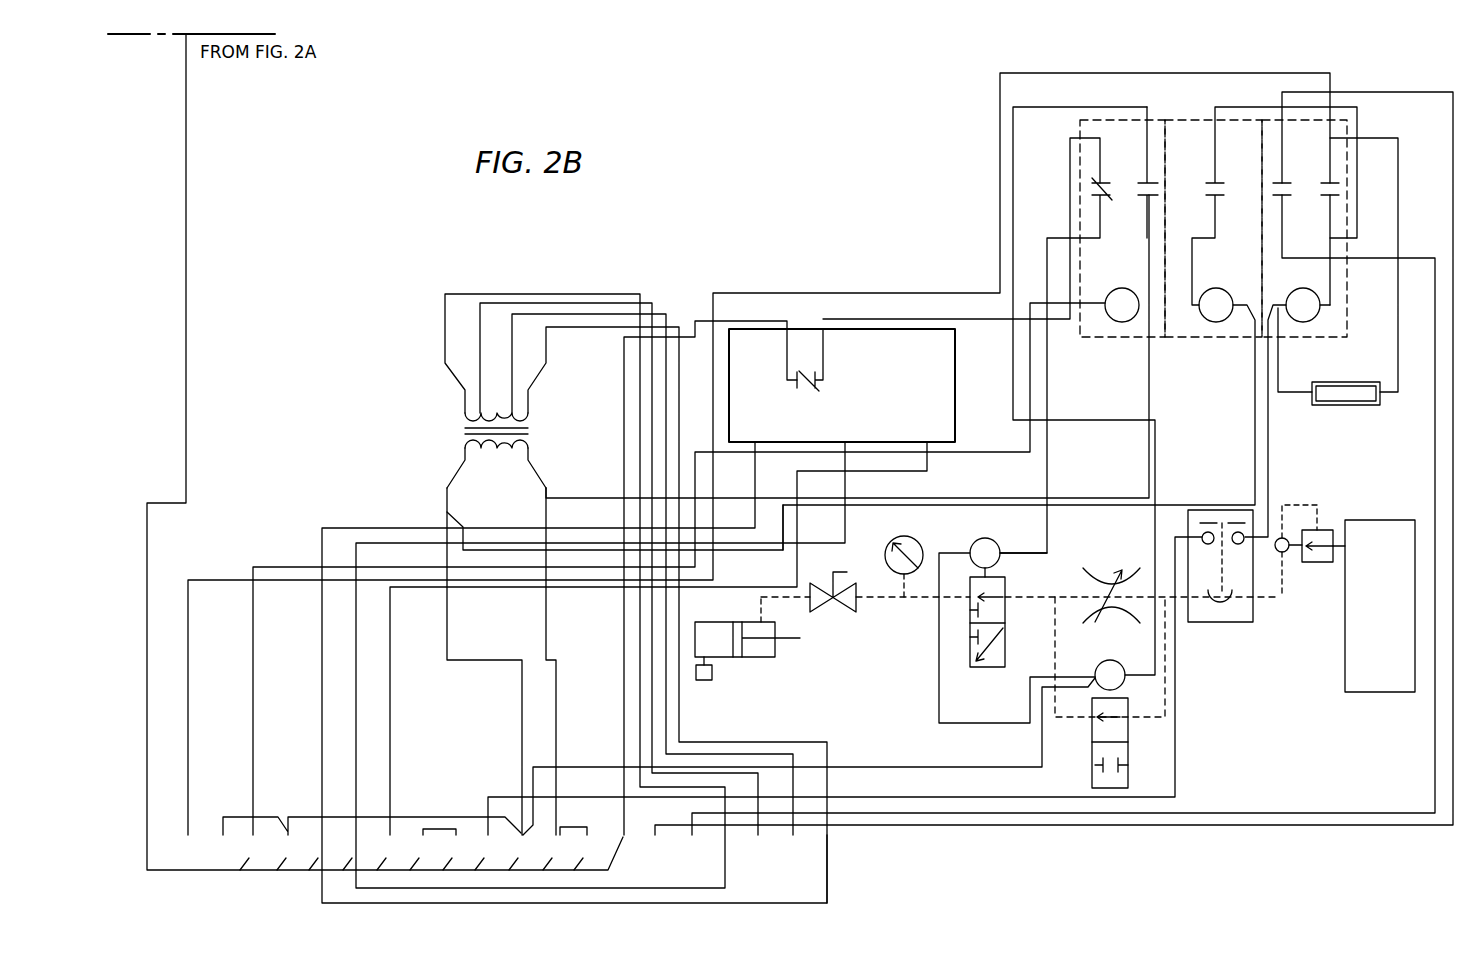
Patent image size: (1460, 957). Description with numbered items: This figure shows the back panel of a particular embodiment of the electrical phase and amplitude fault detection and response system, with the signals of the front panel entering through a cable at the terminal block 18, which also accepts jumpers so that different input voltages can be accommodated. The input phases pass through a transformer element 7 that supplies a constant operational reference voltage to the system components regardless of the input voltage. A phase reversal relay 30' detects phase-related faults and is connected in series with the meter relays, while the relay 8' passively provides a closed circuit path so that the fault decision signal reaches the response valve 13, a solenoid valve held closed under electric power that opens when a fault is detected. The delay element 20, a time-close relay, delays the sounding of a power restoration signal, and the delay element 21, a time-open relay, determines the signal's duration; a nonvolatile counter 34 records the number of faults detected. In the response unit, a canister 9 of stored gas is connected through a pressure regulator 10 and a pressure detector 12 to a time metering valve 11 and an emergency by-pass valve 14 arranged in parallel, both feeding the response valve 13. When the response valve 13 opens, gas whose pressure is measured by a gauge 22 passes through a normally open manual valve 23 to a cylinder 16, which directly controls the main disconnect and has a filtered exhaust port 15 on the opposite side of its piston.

The transformer element 7 is at (488, 452).
The relay 8' is at (1082, 391).
The delay element 20 is at (1220, 340).
The delay element 21 is at (1312, 340).
The counter 34 is at (1322, 405).
The phase reversal relay 30' is at (842, 385).
The gauge 22 is at (920, 544).
The manual valve 23 is at (822, 602).
The cylinder 16 is at (748, 658).
The filtered exhaust port 15 is at (712, 681).
The response valve 13 is at (994, 668).
The time metering valve 11 is at (1098, 576).
The pressure detector 12 is at (1212, 623).
The pressure regulator 10 is at (1322, 562).
The canister 9 is at (1345, 690).
The emergency by-pass valve 14 is at (1128, 786).
The terminal block 18 is at (836, 858).